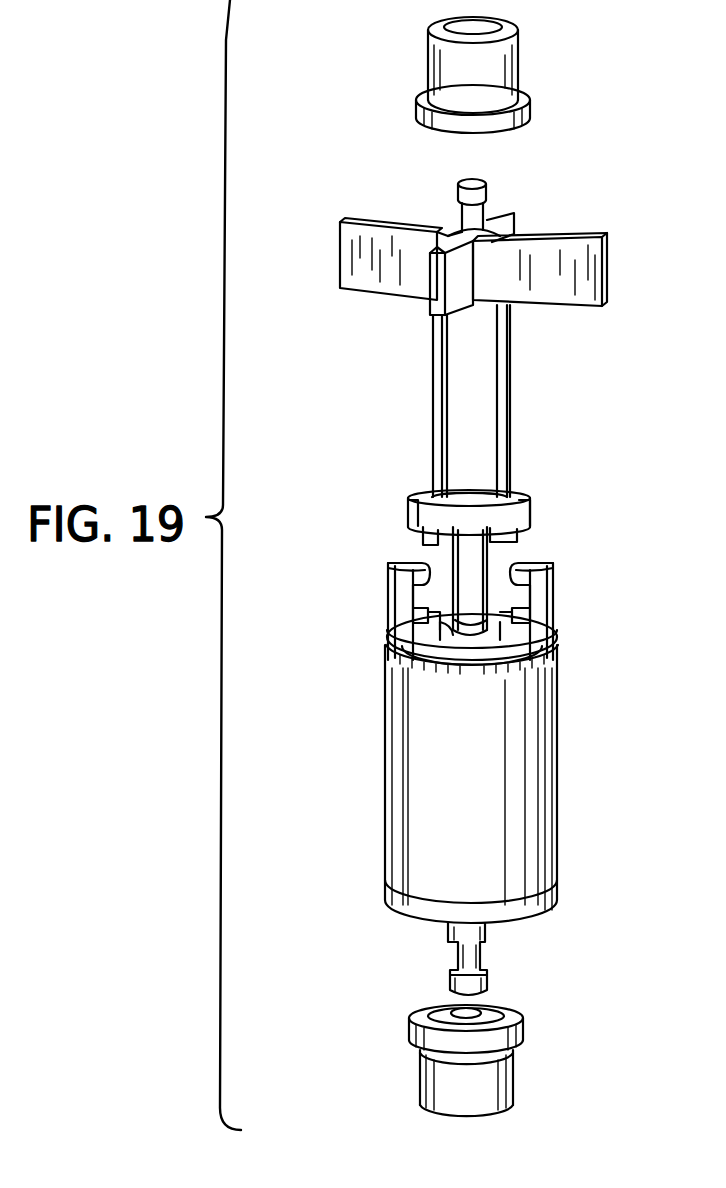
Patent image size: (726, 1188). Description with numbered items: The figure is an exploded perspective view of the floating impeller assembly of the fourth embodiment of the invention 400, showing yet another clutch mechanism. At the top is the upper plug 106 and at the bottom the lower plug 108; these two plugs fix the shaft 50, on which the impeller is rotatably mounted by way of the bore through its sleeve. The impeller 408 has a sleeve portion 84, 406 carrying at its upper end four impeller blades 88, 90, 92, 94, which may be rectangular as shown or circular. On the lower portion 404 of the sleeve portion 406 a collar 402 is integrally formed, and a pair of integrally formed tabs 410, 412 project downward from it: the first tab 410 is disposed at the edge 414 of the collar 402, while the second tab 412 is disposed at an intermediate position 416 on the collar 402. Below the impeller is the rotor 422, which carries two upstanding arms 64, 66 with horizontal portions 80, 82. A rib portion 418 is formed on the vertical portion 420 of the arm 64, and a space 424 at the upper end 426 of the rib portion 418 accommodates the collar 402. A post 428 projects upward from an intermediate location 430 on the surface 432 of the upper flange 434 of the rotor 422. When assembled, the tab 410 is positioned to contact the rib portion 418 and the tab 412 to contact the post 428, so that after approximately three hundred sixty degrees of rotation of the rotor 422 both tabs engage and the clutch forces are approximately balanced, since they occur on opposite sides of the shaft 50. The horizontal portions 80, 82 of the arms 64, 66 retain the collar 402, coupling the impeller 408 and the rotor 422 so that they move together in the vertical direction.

The plug 106 is at (517, 67).
The shaft 50 is at (477, 213).
The impeller blade 88 is at (363, 235).
The impeller blade 90 is at (512, 222).
The impeller blade 94 is at (608, 270).
The impeller blade 92 is at (435, 305).
The sleeve portion 84 is at (505, 350).
The impeller 408 is at (510, 404).
The sleeve portion 406 is at (455, 457).
The lower portion 404 is at (452, 493).
The collar 402 is at (530, 487).
The intermediate position 416 is at (532, 503).
The edge 414 is at (408, 510).
The tab 410 is at (412, 537).
The tab 412 is at (503, 537).
The horizontal portion 82 is at (537, 563).
The horizontal portion 80 is at (387, 565).
The arm 64 is at (417, 593).
The vertical portion 420 is at (413, 602).
The space 424 is at (422, 622).
The upper end 426 is at (433, 636).
The rib portion 418 is at (395, 690).
The arm 66 is at (551, 583).
The post 428 is at (520, 617).
The intermediate location 430 is at (537, 645).
The upper flange 434 is at (517, 653).
The surface 432 is at (438, 650).
The rotor 422 is at (553, 788).
The fourth embodiment of the invention 400 is at (388, 943).
The plug 108 is at (508, 1072).